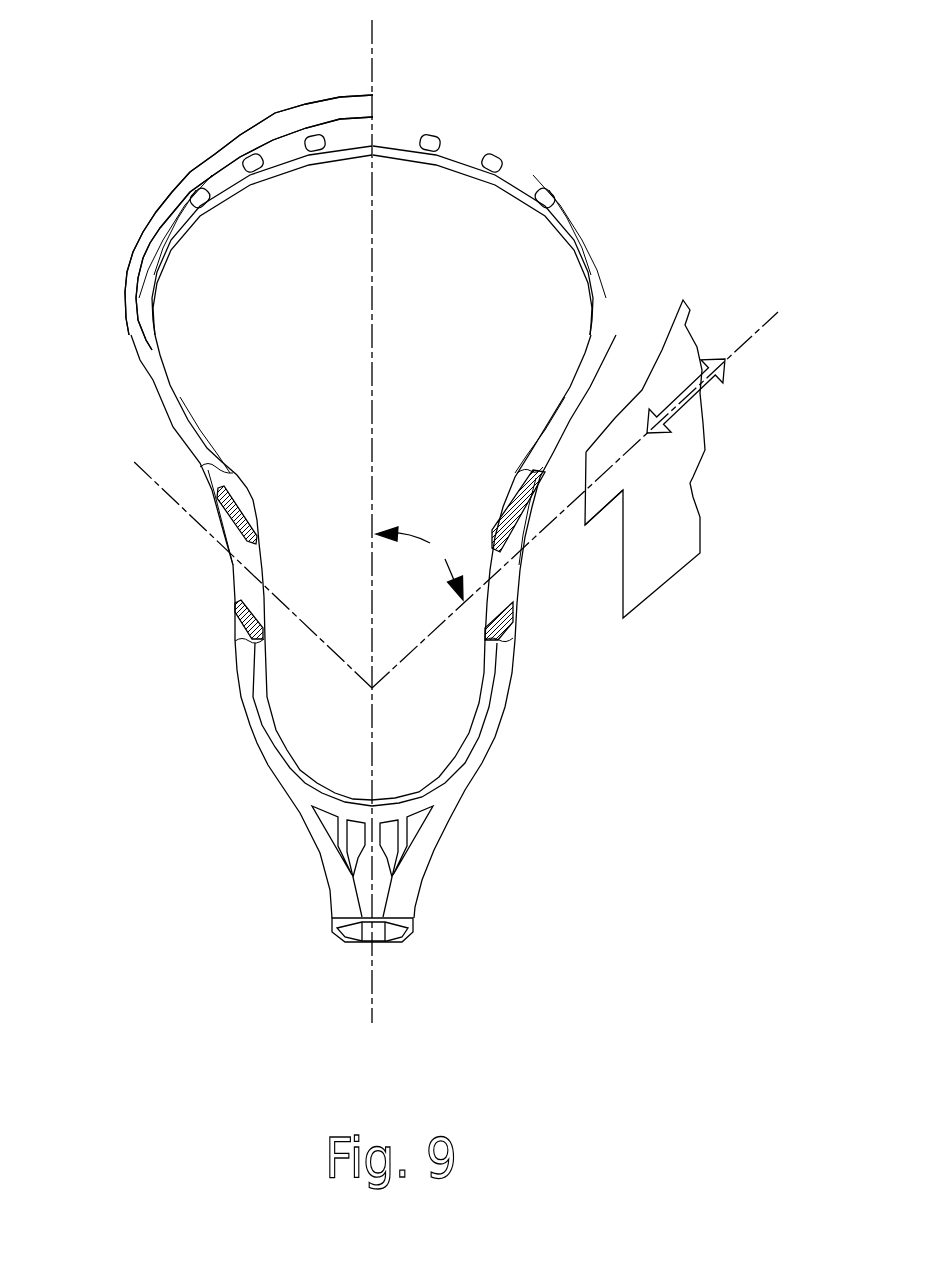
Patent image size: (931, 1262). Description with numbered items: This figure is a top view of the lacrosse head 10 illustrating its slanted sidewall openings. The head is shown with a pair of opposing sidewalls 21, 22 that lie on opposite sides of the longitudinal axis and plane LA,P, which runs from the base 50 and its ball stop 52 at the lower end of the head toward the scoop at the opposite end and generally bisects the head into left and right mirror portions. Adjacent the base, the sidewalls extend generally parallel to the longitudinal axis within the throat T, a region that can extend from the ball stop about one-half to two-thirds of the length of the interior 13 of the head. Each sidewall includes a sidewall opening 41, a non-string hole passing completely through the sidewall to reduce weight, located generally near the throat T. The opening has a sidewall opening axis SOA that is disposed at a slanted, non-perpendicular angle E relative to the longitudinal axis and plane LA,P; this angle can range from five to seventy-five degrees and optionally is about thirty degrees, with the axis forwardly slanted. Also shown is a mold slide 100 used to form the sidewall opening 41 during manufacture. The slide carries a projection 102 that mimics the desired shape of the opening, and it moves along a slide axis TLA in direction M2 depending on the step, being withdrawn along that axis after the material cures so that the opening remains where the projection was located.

The lacrosse head 10 is at (207, 88).
The interior 13 is at (326, 233).
The sidewall 21 is at (132, 320).
The sidewall 22 is at (620, 290).
The sidewall opening 41 is at (245, 588).
The base 50 is at (397, 860).
The ball stop 52 is at (397, 797).
The slide 100 is at (687, 530).
The projection 102 is at (607, 507).
The slide axis TLA is at (765, 322).
The sidewall opening axis SOA is at (163, 492).
The slanted angle E is at (419, 563).
The direction M2 is at (714, 390).
The longitudinal axis and plane LA,P is at (372, 990).
The throat T is at (326, 701).